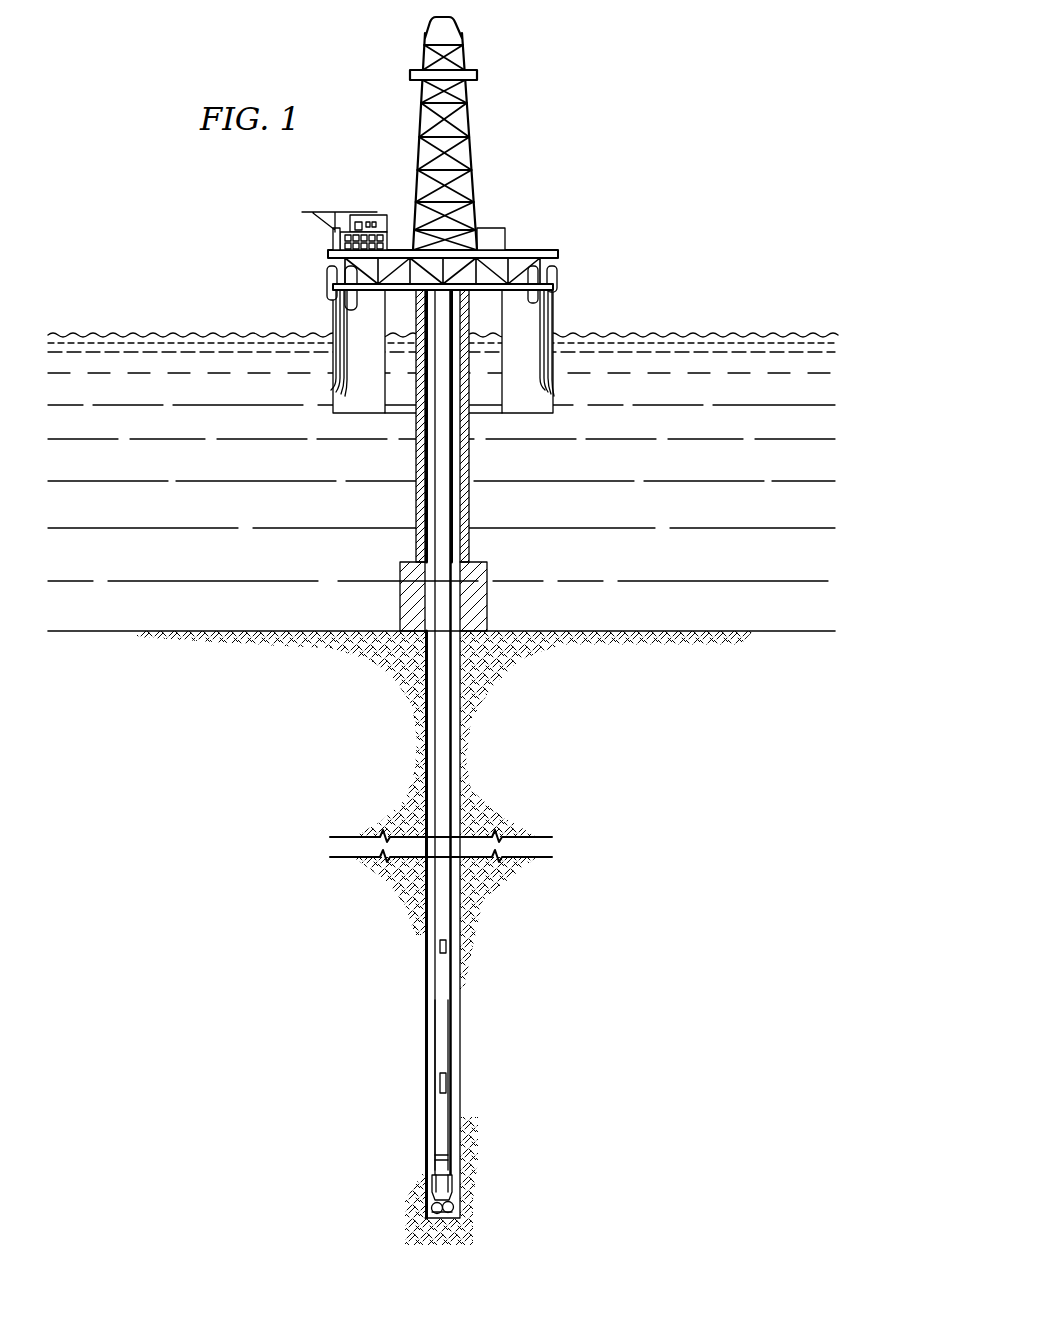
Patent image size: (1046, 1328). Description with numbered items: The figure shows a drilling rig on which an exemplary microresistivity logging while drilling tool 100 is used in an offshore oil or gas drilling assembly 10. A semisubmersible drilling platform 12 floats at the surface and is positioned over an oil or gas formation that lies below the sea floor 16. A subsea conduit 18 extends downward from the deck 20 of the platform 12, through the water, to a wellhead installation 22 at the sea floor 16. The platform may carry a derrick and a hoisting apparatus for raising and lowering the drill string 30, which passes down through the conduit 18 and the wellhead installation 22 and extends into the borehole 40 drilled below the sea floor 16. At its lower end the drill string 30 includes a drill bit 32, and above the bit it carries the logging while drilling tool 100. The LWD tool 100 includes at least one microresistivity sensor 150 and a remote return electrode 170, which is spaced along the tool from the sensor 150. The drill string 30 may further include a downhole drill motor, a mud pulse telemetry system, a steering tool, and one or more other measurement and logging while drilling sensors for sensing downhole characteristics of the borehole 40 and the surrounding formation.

The offshore oil or gas drilling assembly 10 is at (541, 144).
The semisubmersible drilling platform 12 is at (546, 252).
The sea floor 16 is at (705, 630).
The subsea conduit 18 is at (470, 505).
The deck 20 is at (520, 288).
The wellhead installation 22 is at (482, 560).
The drill string 30 is at (443, 425).
The drill bit 32 is at (459, 1207).
The borehole 40 is at (456, 746).
The microresistivity logging while drilling tool 100 is at (435, 1017).
The microresistivity sensor 150 is at (448, 1082).
The remote return electrode 170 is at (438, 946).